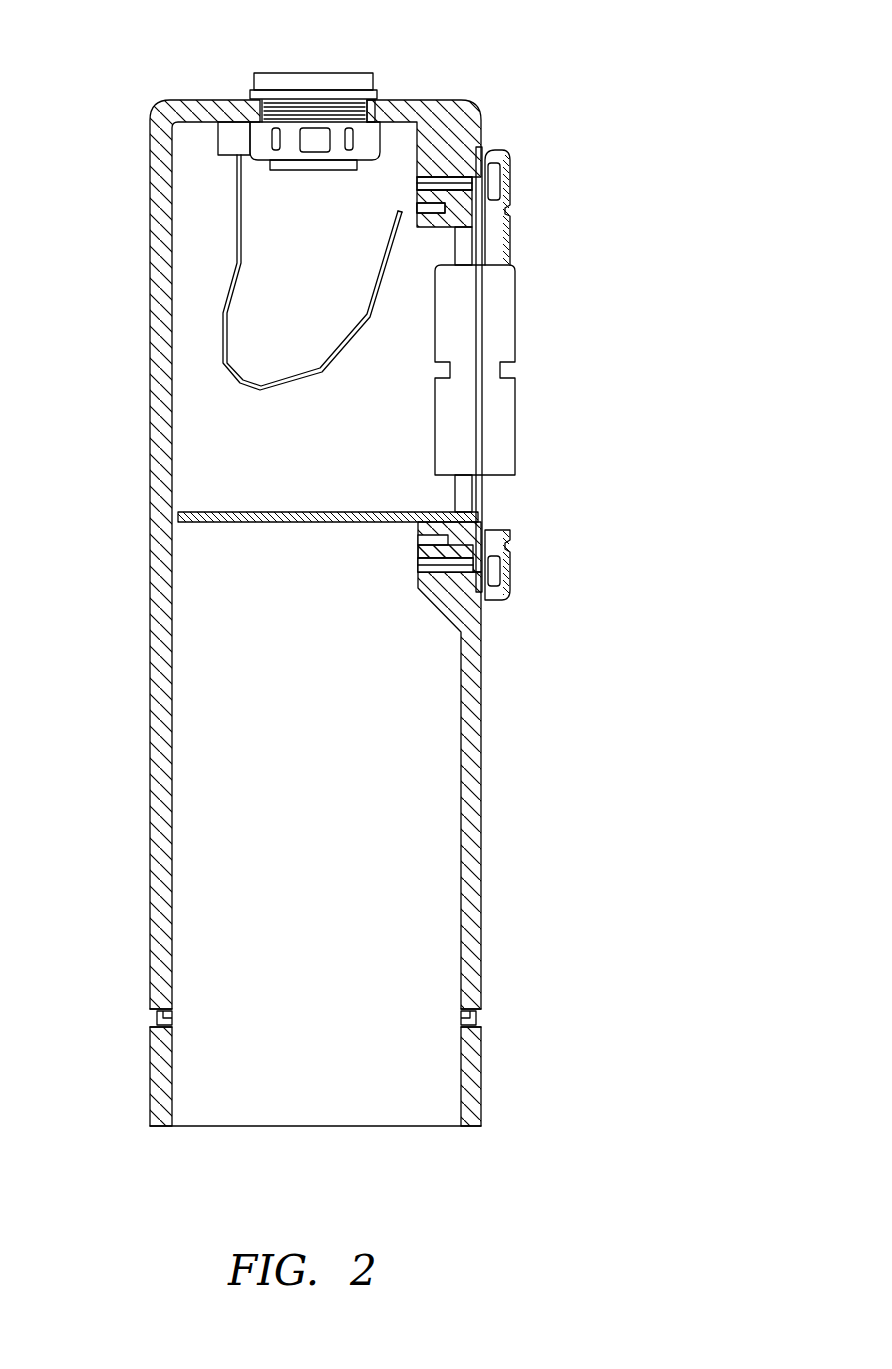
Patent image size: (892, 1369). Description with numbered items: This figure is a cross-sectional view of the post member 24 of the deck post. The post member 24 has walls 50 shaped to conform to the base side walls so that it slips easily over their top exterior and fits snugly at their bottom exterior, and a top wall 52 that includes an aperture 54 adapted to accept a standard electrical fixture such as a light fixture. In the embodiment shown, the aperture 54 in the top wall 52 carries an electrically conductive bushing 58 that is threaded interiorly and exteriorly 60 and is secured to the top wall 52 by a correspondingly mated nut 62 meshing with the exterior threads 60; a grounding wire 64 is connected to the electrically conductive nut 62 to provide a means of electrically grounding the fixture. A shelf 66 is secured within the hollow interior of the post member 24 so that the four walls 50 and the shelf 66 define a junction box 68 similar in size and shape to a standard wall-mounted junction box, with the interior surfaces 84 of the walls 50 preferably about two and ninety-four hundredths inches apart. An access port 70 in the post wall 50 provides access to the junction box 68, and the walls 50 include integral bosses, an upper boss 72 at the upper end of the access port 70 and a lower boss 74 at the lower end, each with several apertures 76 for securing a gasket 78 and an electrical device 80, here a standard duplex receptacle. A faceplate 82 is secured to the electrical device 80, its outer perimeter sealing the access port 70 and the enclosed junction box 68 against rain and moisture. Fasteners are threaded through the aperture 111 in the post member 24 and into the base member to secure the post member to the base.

The post member 24 is at (648, 518).
The walls 50 is at (470, 749).
The top wall 52 is at (185, 108).
The aperture 54 is at (383, 101).
The electrically conductive bushing 58 is at (312, 78).
The exterior threads 60 is at (283, 110).
The nut 62 is at (315, 153).
The grounding wire 64 is at (283, 386).
The shelf 66 is at (300, 523).
The junction box 68 is at (225, 437).
The access port 70 is at (467, 494).
The upper boss 72 is at (417, 199).
The lower boss 74 is at (433, 548).
The apertures 76 is at (418, 183).
The gasket 78 is at (471, 148).
The electrical device 80 is at (508, 318).
The faceplate 82 is at (506, 180).
The interior surfaces 84 is at (175, 880).
The aperture 111 is at (152, 1020).